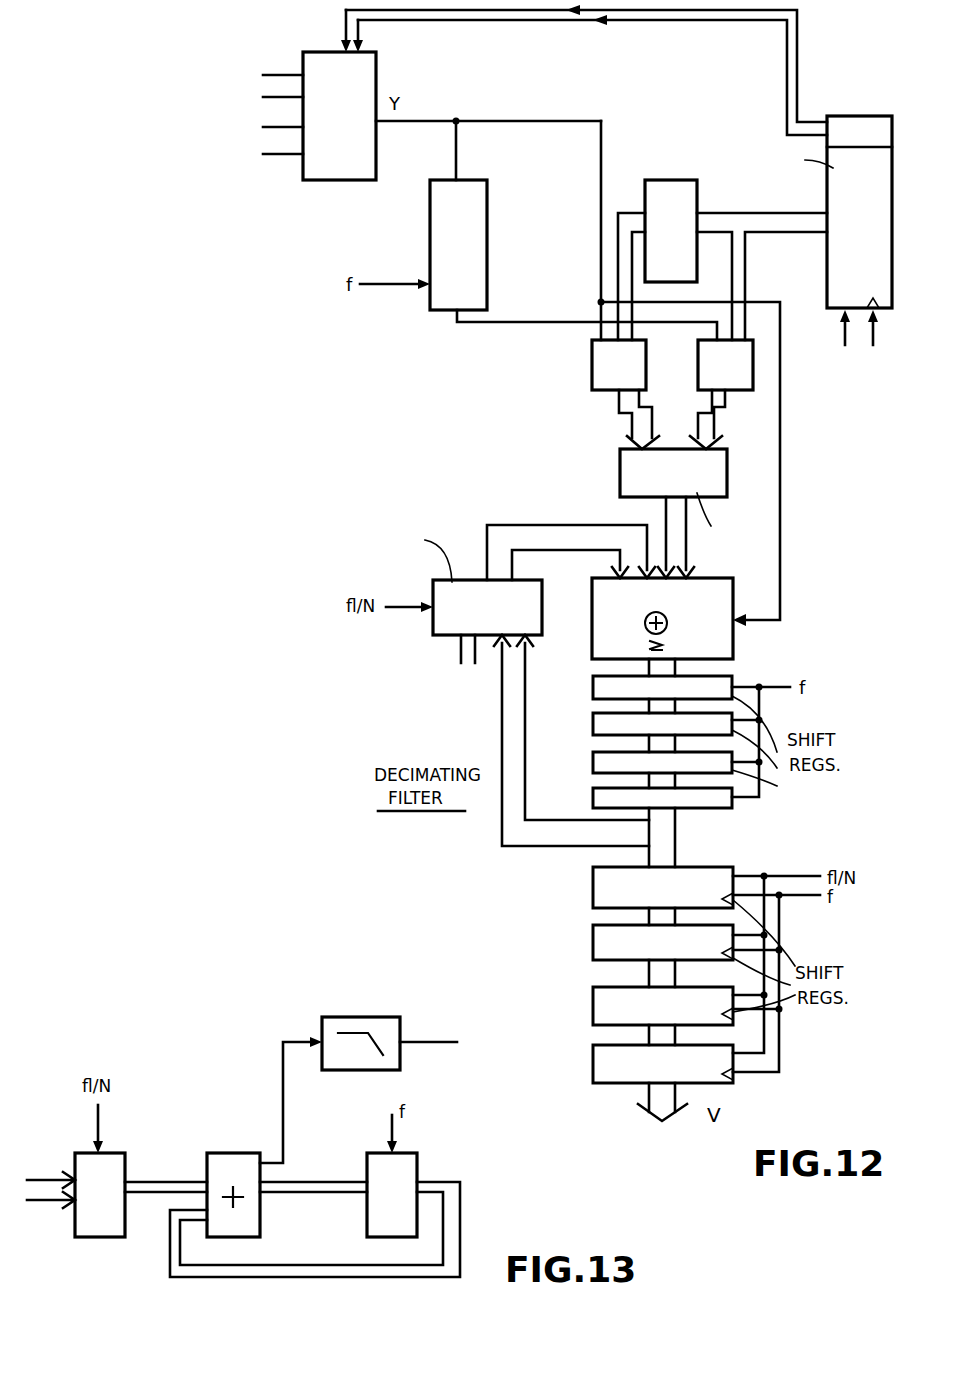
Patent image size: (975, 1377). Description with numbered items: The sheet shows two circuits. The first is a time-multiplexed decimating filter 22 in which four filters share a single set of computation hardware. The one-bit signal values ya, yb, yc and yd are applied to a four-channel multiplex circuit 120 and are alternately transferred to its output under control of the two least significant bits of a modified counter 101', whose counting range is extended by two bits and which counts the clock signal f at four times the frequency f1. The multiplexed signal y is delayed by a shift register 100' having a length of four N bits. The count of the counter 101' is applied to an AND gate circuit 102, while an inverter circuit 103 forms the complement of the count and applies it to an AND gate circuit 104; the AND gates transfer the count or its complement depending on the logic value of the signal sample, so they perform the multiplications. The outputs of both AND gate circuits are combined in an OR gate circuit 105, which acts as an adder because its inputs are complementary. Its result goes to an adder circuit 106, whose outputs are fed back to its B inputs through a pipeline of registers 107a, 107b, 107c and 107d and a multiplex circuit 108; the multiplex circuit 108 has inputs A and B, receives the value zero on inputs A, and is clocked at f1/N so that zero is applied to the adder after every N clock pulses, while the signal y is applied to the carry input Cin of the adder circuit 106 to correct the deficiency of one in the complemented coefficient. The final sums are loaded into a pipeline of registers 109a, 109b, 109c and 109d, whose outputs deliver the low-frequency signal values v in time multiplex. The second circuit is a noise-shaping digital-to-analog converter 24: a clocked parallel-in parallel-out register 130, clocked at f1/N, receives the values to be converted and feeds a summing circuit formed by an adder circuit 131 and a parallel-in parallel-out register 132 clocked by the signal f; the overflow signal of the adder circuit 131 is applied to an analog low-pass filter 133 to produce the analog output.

In FIG. 12, the decimating filter 22 is at (762, 103).
In FIG. 12, the four-channel multiplex circuit 120 is at (372, 76).
In FIG. 12, the 4N-bit shift register 100' is at (489, 245).
In FIG. 12, the modified counter 101' is at (807, 246).
In FIG. 12, the inverter circuit 103 is at (683, 197).
In FIG. 12, the AND gate circuit 104 is at (597, 373).
In FIG. 12, the AND gate circuit 102 is at (744, 380).
In FIG. 12, the OR gate circuit 105 is at (712, 472).
In FIG. 12, the multiplex circuit 108 is at (530, 618).
In FIG. 12, the adder circuit 106 is at (718, 645).
In FIG. 12, the register 107a is at (597, 696).
In FIG. 12, the register 107b is at (597, 732).
In FIG. 12, the register 107c is at (597, 770).
In FIG. 12, the register 107d is at (597, 806).
In FIG. 12, the register 109a is at (597, 896).
In FIG. 12, the register 109b is at (597, 952).
In FIG. 12, the register 109c is at (597, 1014).
In FIG. 12, the register 109d is at (597, 1072).
In FIG. 13, the digital-to-analog converter 24 is at (220, 1027).
In FIG. 13, the clocked parallel-in parallel-out register 130 is at (113, 1218).
In FIG. 13, the adder circuit 131 is at (255, 1222).
In FIG. 13, the parallel-in parallel-out register 132 is at (410, 1173).
In FIG. 13, the analog low-pass filter 133 is at (392, 1028).